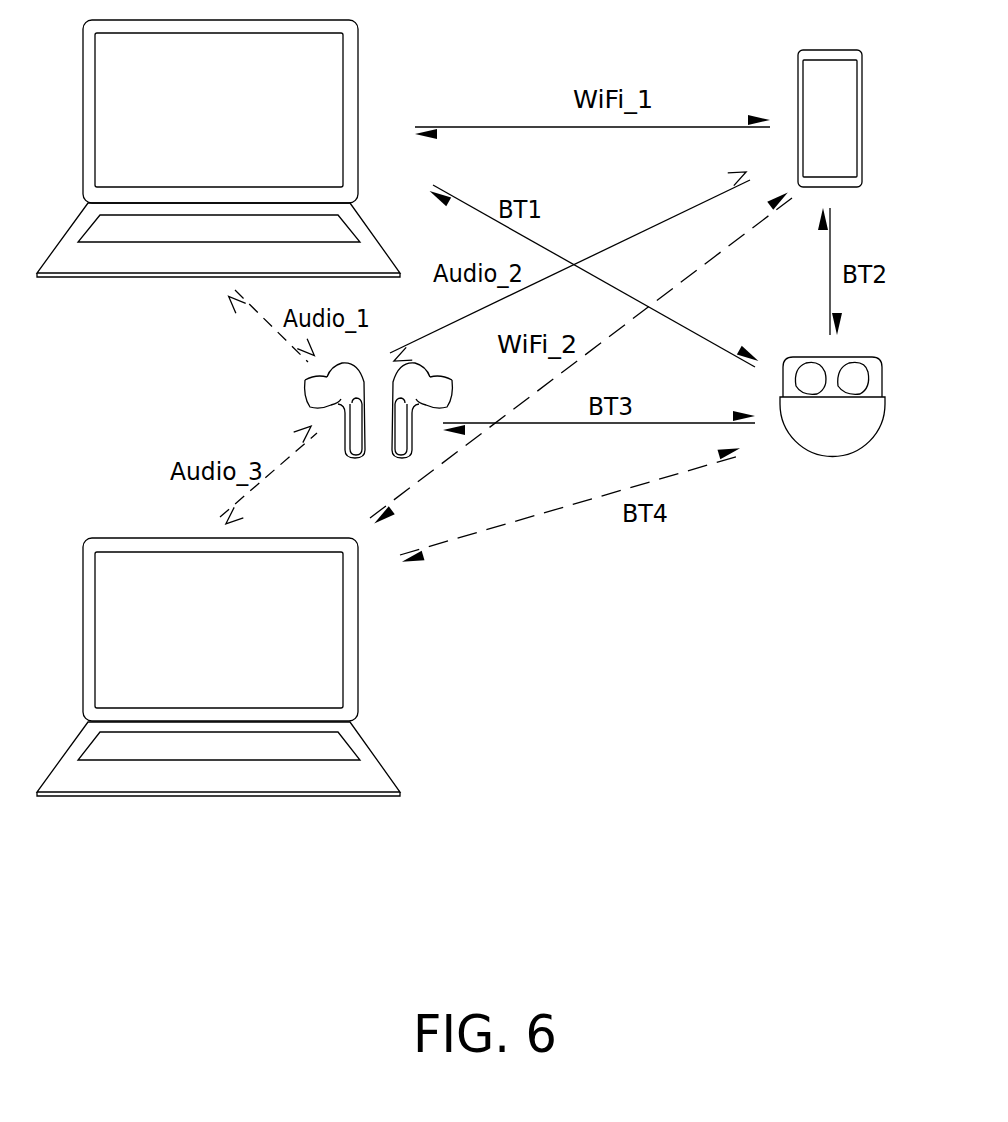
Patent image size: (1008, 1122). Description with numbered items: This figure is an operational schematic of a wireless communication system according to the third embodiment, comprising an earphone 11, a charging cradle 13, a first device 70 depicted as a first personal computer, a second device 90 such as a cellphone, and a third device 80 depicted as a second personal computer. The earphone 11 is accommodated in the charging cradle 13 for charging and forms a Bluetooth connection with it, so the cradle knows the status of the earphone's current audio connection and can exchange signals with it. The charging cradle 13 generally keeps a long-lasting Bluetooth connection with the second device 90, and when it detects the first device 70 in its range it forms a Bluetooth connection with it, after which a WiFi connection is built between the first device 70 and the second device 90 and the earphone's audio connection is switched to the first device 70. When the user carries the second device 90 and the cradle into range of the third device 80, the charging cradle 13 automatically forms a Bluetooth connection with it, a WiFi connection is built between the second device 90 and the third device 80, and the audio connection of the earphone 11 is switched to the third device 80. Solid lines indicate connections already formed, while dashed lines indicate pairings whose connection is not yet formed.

The first device 70 is at (358, 44).
The third device 80 is at (358, 630).
The second device 90 is at (798, 73).
The earphone 11 is at (300, 403).
The charging cradle 13 is at (833, 458).